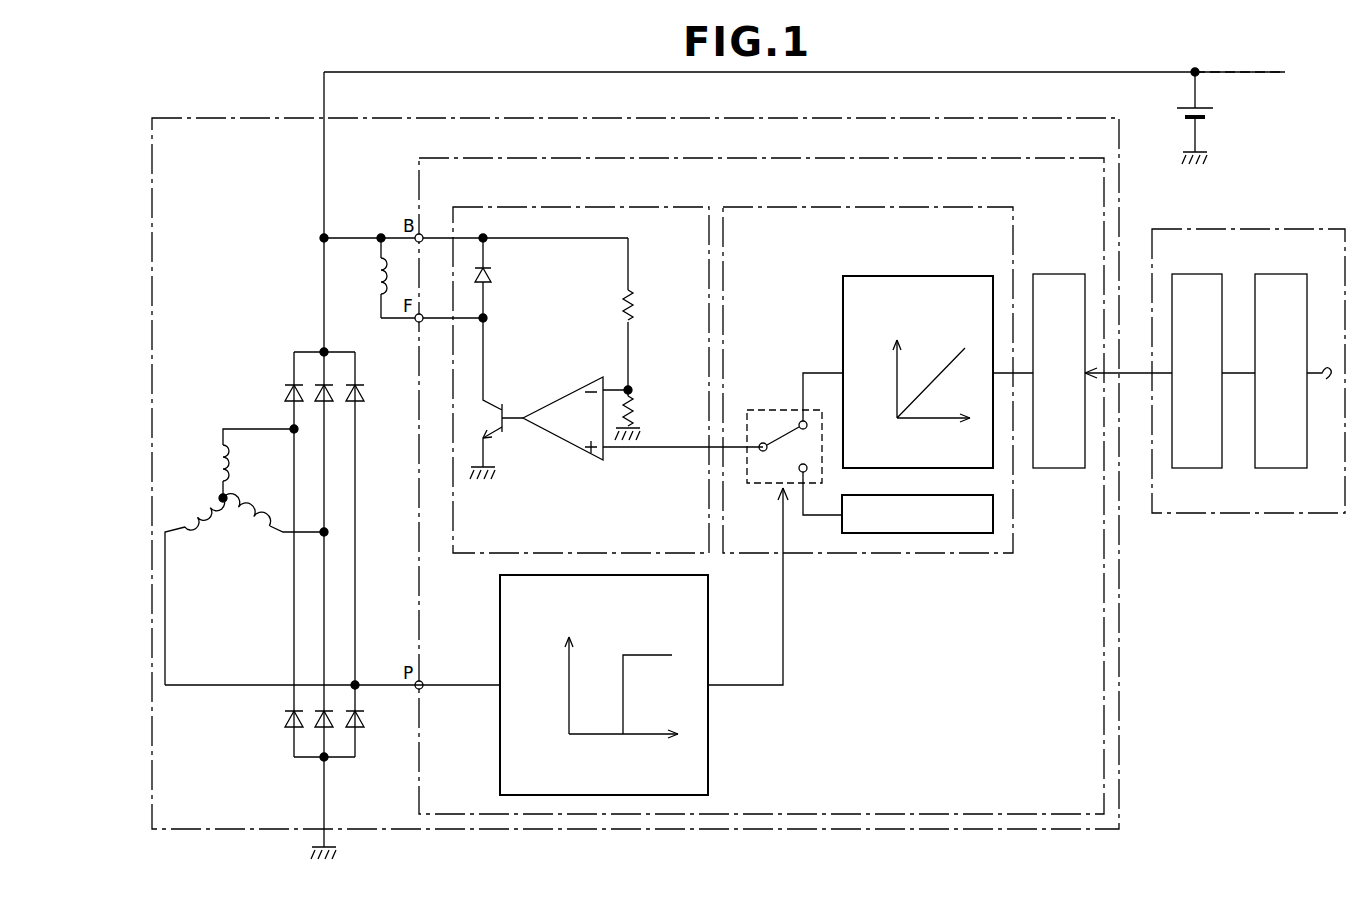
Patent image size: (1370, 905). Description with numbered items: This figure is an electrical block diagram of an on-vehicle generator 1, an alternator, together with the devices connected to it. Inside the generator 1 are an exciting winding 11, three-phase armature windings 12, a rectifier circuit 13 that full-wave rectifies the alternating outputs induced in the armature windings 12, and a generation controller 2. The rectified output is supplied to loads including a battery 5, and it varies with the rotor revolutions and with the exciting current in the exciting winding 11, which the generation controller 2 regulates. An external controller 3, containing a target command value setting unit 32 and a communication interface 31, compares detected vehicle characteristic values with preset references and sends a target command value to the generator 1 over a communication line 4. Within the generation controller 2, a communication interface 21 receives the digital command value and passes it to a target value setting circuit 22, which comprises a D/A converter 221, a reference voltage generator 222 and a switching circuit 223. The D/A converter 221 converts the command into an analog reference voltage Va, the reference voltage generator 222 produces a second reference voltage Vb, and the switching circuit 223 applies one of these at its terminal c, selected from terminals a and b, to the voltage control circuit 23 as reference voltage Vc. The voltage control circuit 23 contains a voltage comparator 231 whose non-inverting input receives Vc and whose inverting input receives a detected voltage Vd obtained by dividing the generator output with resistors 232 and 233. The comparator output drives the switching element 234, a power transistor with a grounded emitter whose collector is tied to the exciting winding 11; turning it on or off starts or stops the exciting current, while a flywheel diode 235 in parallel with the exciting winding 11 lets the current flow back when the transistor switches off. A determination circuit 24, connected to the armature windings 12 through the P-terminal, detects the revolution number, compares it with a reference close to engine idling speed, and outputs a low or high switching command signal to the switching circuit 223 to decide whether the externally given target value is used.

The on-vehicle generator 1 is at (752, 118).
The generation controller 2 is at (794, 158).
The external controller 3 is at (1244, 230).
The communication line 4 is at (1128, 372).
The battery 5 is at (1215, 110).
The exciting winding 11 is at (380, 296).
The armature windings 12 is at (216, 494).
The rectifier circuit 13 is at (308, 352).
The communication interface 21 is at (1052, 275).
The target value setting circuit 22 is at (868, 207).
The D/A converter 221 is at (930, 266).
The reference voltage generator 222 is at (993, 515).
The switching circuit 223 is at (766, 410).
The voltage control circuit 23 is at (573, 207).
The voltage comparator 231 is at (571, 388).
The resistor 232 is at (640, 316).
The resistor 233 is at (636, 410).
The switching element 234 is at (492, 400).
The flywheel diode 235 is at (490, 272).
The determination circuit 24 is at (708, 624).
The communication interface 31 is at (1192, 275).
The target command value setting unit 32 is at (1275, 275).